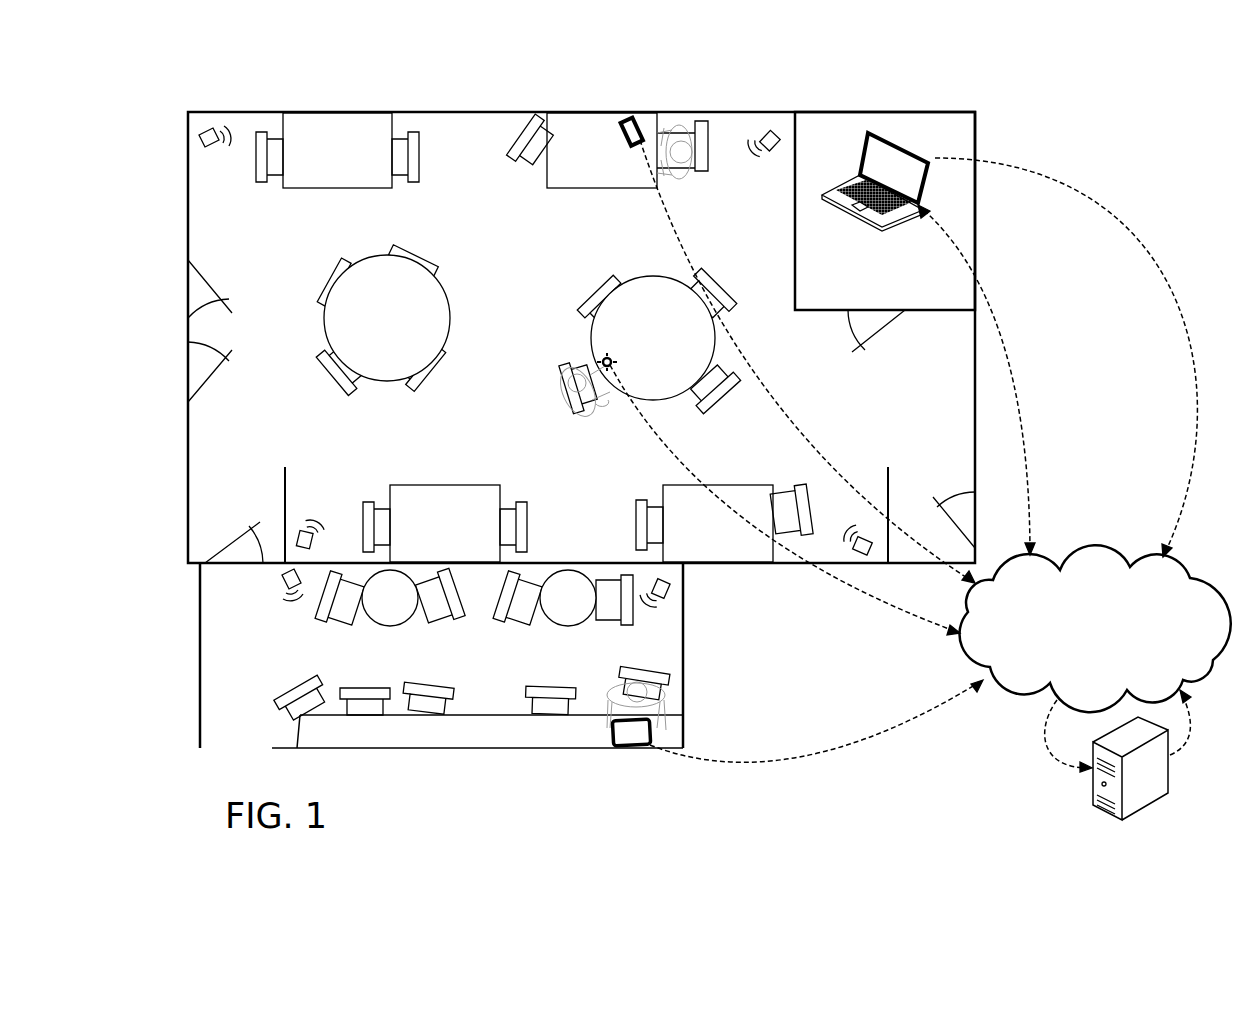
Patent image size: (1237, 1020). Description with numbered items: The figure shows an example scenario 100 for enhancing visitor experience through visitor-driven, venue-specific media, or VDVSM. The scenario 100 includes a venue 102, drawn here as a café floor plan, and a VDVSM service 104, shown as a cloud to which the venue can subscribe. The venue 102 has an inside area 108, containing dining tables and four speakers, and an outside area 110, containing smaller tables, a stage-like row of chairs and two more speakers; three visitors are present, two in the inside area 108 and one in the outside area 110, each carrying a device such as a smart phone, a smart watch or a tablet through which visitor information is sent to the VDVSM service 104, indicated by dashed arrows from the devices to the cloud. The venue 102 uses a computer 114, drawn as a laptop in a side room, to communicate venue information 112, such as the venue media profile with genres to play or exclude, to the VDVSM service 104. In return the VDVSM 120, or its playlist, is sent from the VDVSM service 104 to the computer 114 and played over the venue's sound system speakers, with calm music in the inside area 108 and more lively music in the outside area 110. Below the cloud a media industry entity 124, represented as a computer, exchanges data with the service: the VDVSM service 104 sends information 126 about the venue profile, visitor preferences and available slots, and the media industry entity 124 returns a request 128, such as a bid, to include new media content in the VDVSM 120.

The scenario 100 is at (708, 439).
The venue 102 is at (500, 112).
The VDVSM service 104 is at (1095, 628).
The inside area 108 is at (534, 337).
The outside area 110 is at (441, 655).
The venue information 112 is at (1085, 199).
The computer 114 is at (866, 222).
The VDVSM 120 is at (999, 336).
The media industry entity 124 is at (1130, 768).
The information 126 is at (1062, 762).
The request 128 is at (1184, 743).